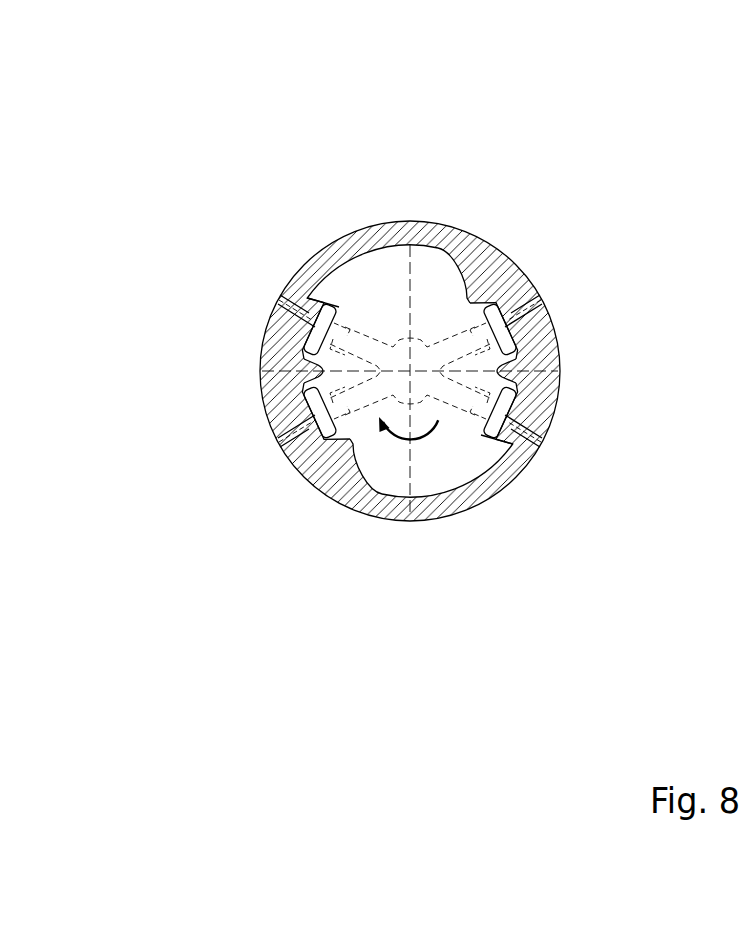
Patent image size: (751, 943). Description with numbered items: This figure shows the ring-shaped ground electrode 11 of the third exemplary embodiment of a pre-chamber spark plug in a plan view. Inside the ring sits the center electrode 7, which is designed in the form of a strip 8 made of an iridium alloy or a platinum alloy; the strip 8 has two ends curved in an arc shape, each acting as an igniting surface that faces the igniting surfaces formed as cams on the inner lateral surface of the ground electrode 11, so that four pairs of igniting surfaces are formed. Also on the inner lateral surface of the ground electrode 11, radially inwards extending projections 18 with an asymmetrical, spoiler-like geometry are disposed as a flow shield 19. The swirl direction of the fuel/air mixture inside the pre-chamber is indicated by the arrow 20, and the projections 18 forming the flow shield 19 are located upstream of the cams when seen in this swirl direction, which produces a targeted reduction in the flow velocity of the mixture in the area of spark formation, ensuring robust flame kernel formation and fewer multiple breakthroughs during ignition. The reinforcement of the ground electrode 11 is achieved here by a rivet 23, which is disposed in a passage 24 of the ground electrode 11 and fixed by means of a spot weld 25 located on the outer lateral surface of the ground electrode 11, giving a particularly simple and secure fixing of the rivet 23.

The center electrode 7 is at (410, 328).
The strip 8 is at (388, 318).
The ground electrode 11 is at (440, 230).
The projections 18 is at (382, 381).
The flow shield 19 is at (468, 300).
The arrow 20 is at (416, 440).
The rivet 23 is at (421, 396).
The passage 24 is at (307, 315).
The spot weld 25 is at (283, 310).